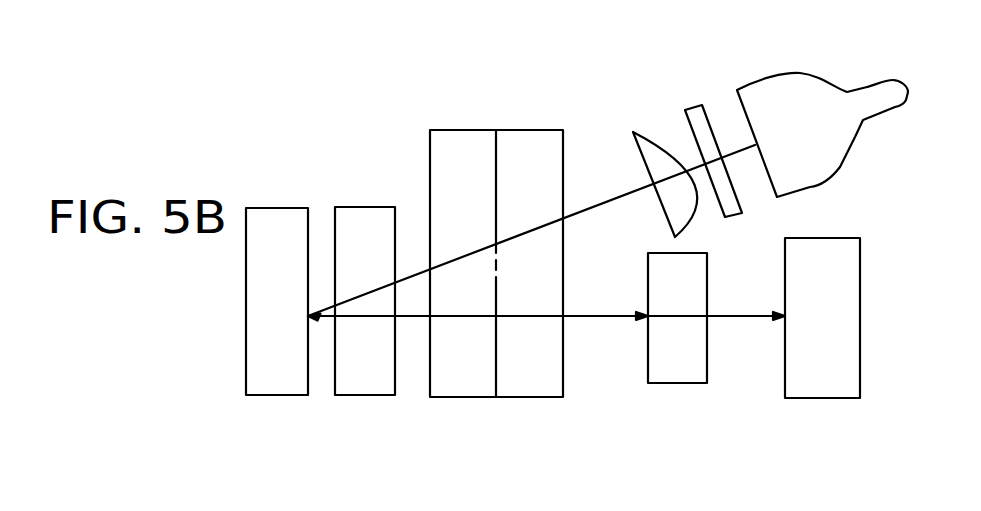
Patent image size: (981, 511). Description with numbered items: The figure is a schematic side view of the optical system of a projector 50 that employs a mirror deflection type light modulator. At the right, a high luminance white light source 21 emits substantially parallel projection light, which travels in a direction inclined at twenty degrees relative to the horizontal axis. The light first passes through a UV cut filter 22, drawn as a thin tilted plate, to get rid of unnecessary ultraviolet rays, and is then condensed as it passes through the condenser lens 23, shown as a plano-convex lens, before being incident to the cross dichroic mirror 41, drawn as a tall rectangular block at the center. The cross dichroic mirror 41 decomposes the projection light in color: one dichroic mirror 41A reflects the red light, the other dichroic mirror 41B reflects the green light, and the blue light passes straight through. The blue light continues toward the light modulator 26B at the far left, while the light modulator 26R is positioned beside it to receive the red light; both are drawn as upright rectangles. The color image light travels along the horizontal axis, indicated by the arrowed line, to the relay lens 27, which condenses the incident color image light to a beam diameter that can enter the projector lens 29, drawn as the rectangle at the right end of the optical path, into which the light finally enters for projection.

The high luminance white light source 21 is at (825, 117).
The UV cut filter 22 is at (699, 118).
The condenser lens 23 is at (650, 142).
The light modulator for blue light 26B is at (271, 222).
The light modulator for red light 26R is at (366, 227).
The relay lens 27 is at (685, 355).
The projector lens 29 is at (840, 370).
The cross dichroic mirror 41 is at (475, 130).
The dichroic mirror 41A is at (446, 166).
The dichroic mirror 41B is at (526, 168).
The projector 50 is at (838, 482).